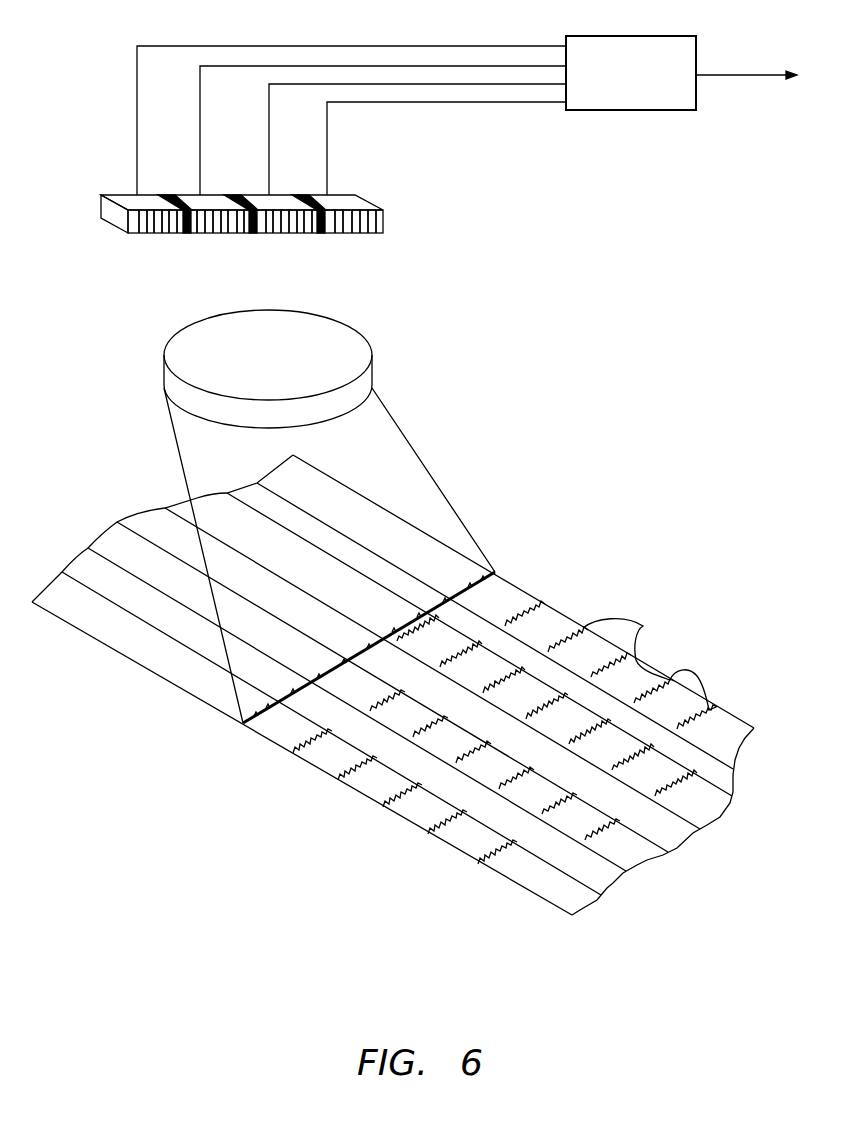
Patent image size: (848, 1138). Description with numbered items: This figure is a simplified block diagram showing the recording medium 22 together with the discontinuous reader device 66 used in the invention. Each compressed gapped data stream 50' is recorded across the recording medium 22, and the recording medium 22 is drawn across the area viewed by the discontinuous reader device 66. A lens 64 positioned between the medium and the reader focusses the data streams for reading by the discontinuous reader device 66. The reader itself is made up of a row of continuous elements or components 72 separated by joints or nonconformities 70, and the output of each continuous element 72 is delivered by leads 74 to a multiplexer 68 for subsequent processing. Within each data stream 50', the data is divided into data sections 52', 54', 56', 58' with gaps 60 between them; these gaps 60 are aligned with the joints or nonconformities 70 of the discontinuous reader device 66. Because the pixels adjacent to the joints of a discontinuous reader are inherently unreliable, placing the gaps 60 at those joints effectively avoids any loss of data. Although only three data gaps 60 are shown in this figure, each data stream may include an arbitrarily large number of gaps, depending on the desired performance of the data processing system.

The recording medium 22 is at (563, 930).
The compressed gapped data stream 50' is at (523, 685).
The data section 52' is at (463, 828).
The data section 54' is at (397, 717).
The data section 56' is at (466, 670).
The data section 58' is at (526, 632).
The gap 60 is at (644, 731).
The lens 64 is at (372, 372).
The discontinuous reader device 66 is at (263, 220).
The multiplexer 68 is at (681, 63).
The joint or nonconformity 70 is at (300, 196).
The continuous element 72 is at (163, 233).
The leads 74 is at (397, 102).